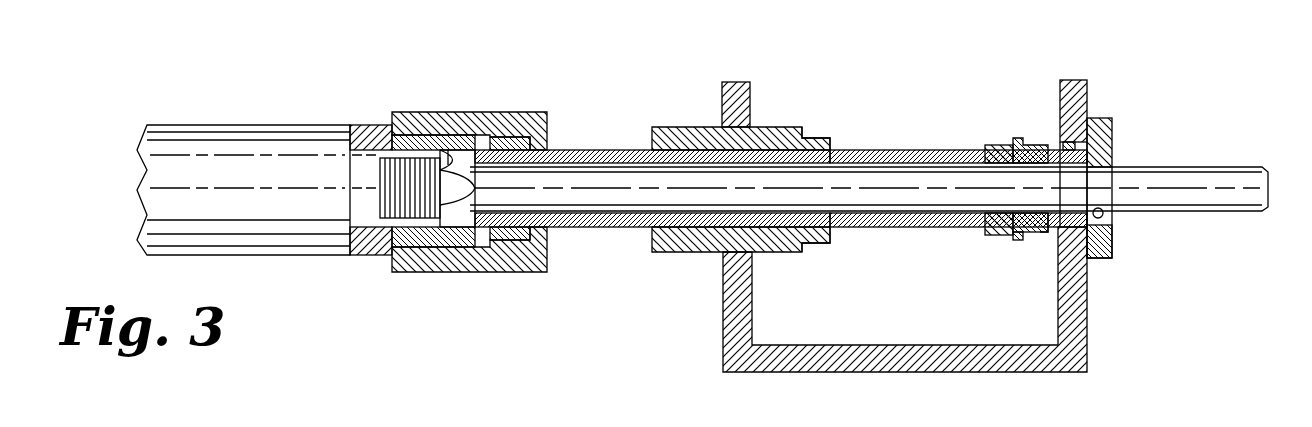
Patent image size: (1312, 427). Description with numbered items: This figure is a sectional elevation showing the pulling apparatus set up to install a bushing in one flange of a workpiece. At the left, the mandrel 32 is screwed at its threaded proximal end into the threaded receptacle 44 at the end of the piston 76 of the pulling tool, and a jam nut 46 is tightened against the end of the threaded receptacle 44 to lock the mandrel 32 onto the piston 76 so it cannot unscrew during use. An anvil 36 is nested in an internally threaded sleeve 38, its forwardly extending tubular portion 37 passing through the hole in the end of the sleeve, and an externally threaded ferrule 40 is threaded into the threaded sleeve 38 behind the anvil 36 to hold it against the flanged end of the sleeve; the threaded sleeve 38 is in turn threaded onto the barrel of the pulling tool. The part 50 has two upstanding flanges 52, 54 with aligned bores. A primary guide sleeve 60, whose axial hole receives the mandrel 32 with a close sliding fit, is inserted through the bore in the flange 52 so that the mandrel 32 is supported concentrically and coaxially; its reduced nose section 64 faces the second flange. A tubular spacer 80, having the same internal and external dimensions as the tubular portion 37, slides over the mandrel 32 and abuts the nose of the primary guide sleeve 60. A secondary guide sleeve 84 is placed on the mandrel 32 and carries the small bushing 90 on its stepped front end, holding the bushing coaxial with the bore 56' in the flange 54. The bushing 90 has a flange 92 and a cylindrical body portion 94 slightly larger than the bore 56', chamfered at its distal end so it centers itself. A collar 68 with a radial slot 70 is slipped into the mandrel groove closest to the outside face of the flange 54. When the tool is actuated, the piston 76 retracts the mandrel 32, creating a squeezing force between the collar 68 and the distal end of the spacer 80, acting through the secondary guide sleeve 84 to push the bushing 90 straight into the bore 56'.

The mandrel 32 is at (1197, 165).
The anvil 36 is at (567, 255).
The tubular portion 37 is at (583, 150).
The threaded sleeve 38 is at (521, 104).
The ferrule 40 is at (505, 248).
The threaded receptacle 44 is at (425, 248).
The jam nut 46 is at (472, 118).
The part 50 is at (895, 382).
The flange 52 is at (735, 84).
The flange 54 is at (1075, 80).
The bore 56' is at (1124, 135).
The primary guide sleeve 60 is at (675, 113).
The nose section 64 is at (822, 137).
The collar 68 is at (1100, 118).
The radial slot 70 is at (1113, 225).
The piston 76 is at (363, 125).
The tubular spacer 80 is at (923, 141).
The secondary guide sleeve 84 is at (1001, 136).
The bushing 90 is at (1042, 136).
The flange 92 is at (1015, 241).
The cylindrical body portion 94 is at (1041, 240).